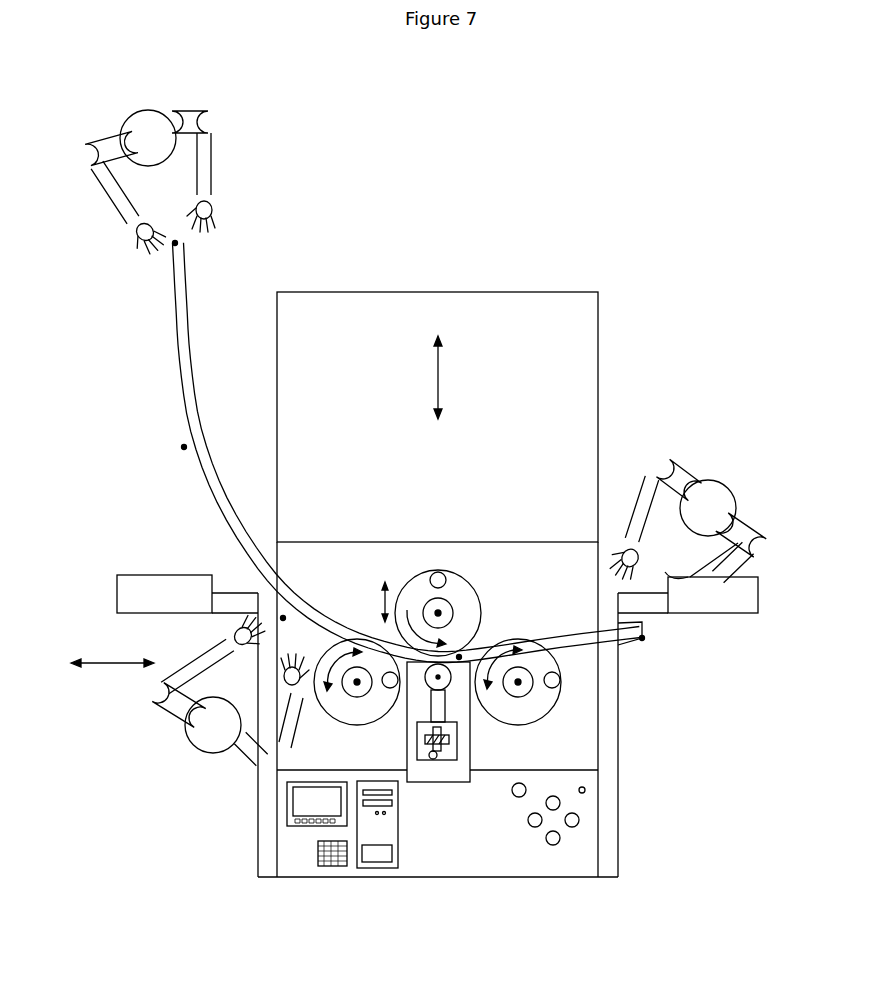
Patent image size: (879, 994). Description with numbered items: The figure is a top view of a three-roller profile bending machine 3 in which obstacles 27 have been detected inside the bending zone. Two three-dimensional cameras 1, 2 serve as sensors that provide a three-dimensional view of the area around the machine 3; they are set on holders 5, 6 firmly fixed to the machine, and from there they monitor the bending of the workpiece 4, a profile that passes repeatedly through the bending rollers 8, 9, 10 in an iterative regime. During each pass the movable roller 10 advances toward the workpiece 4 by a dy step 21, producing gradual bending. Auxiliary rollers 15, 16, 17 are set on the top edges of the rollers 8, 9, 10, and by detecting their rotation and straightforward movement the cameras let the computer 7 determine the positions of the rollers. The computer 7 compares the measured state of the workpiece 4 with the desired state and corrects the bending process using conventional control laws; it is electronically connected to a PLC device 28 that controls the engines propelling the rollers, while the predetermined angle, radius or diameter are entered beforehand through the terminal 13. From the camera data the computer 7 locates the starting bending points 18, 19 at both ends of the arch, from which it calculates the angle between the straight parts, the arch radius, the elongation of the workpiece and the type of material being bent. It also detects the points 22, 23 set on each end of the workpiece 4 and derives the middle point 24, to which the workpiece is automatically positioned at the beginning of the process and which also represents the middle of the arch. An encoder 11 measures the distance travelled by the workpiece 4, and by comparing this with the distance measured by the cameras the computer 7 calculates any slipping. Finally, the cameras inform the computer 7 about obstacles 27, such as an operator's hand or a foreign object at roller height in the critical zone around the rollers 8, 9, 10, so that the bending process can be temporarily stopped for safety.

The 3D camera 1 is at (120, 580).
The 3D camera 2 is at (748, 590).
The bending machine 3 is at (560, 392).
The workpiece 4 is at (208, 500).
The holder 5 is at (267, 857).
The holder 6 is at (607, 856).
The computer 7 is at (384, 860).
The roller 8 is at (343, 703).
The roller 9 is at (510, 702).
The roller 10 is at (462, 598).
The encoder 11 is at (446, 712).
The terminal 13 is at (318, 804).
The auxiliary roller 15 is at (388, 690).
The auxiliary roller 16 is at (550, 690).
The auxiliary roller 17 is at (445, 572).
The starting bending point 18 is at (182, 444).
The starting bending point 19 is at (462, 655).
The dy step 21 is at (380, 588).
The end point of workpiece 22 is at (173, 246).
The end point of workpiece 23 is at (643, 638).
The middle point 24 is at (286, 616).
The obstacle 27 is at (95, 160).
The PLC device 28 is at (330, 866).